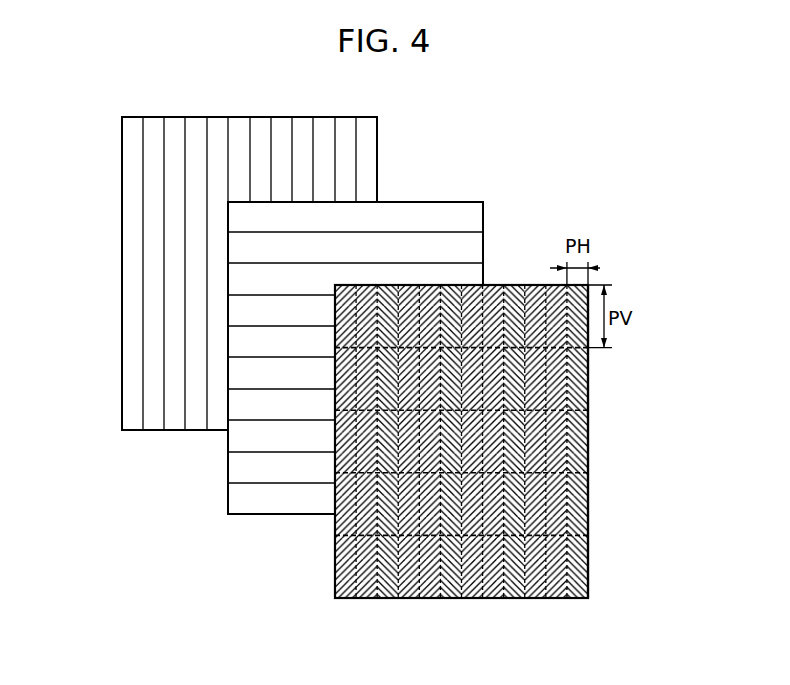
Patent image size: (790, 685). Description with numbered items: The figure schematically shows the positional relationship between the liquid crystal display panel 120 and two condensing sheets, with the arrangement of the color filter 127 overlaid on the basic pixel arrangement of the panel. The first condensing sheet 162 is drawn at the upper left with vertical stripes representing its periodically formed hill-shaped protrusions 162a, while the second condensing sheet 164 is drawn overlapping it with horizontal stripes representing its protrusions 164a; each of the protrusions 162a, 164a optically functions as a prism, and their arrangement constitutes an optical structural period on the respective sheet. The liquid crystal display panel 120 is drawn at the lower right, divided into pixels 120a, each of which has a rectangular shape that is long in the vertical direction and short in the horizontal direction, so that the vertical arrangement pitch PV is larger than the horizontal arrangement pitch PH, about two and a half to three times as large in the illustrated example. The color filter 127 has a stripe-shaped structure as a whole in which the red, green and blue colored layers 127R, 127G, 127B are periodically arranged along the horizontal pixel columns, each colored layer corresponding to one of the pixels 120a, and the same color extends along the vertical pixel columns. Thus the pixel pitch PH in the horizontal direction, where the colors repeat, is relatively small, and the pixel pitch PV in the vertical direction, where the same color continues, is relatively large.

The first condensing sheet 162 is at (175, 115).
The protrusions 162a is at (146, 401).
The second condensing sheet 164 is at (428, 201).
The protrusions 164a is at (263, 485).
The liquid crystal display panel 120 is at (511, 467).
The pixels 120a is at (588, 558).
The color filter 127 is at (588, 452).
The red colored layer 127R is at (470, 598).
The green colored layer 127G is at (490, 598).
The blue colored layer 127B is at (512, 598).